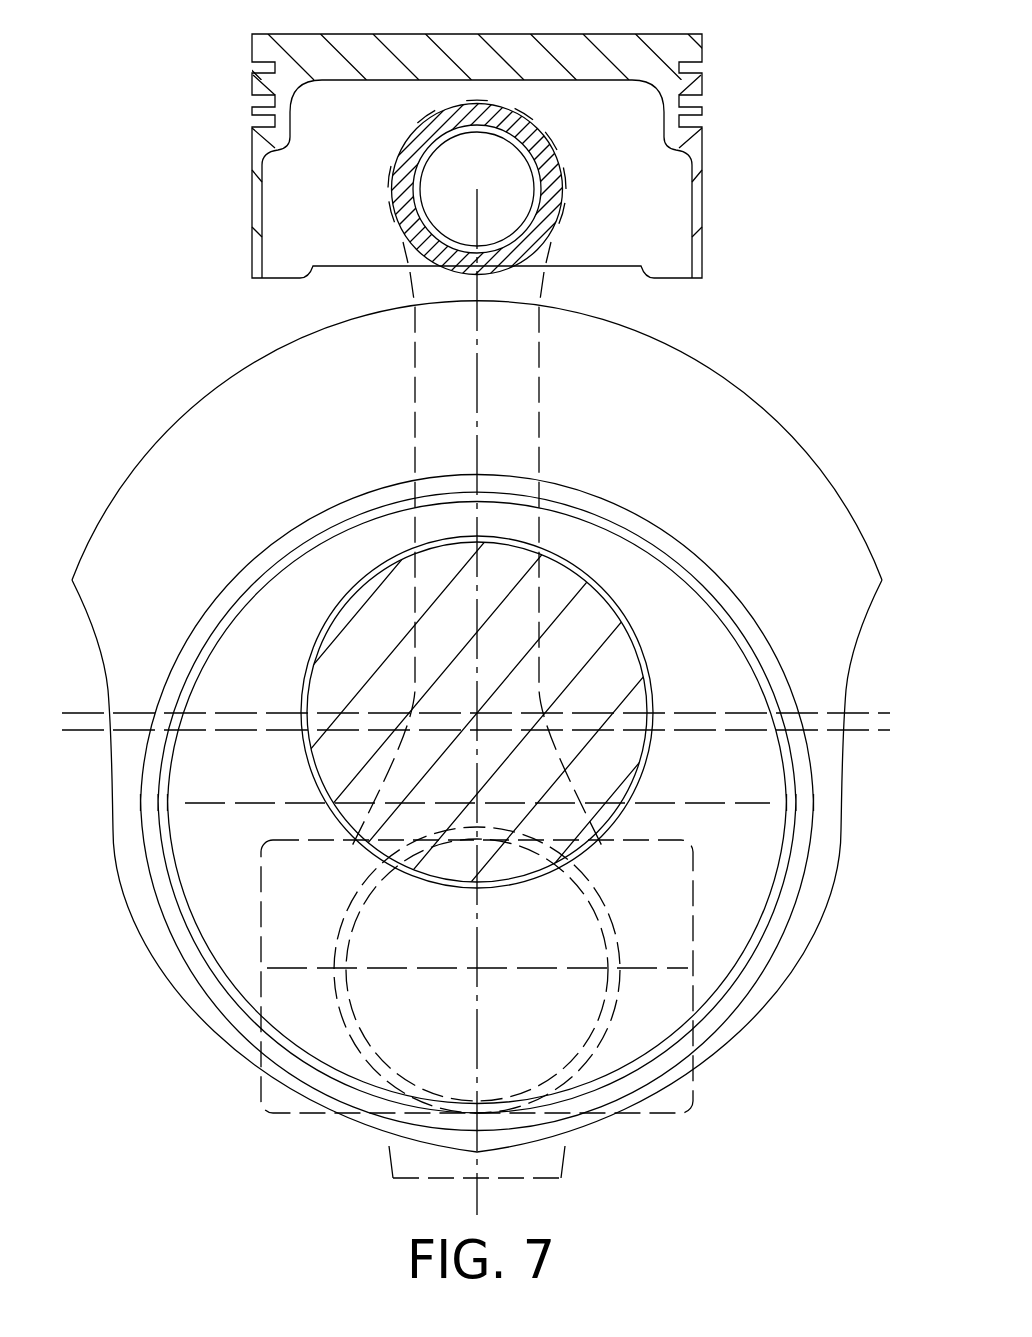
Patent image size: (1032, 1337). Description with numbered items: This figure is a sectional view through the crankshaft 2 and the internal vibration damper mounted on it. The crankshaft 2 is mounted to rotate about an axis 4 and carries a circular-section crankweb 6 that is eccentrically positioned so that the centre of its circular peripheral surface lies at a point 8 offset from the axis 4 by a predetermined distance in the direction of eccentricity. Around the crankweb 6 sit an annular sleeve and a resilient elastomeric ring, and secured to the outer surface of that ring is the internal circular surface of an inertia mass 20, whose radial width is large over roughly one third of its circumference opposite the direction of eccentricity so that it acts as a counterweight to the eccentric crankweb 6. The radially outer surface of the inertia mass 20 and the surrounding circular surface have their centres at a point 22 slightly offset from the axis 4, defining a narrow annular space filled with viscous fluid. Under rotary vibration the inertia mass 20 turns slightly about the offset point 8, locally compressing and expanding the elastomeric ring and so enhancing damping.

The crankshaft 2 is at (583, 597).
The axis 4 is at (477, 712).
The crankweb 6 is at (202, 872).
The point 8 is at (472, 803).
The inertia mass 20 is at (833, 795).
The point 22 is at (478, 728).